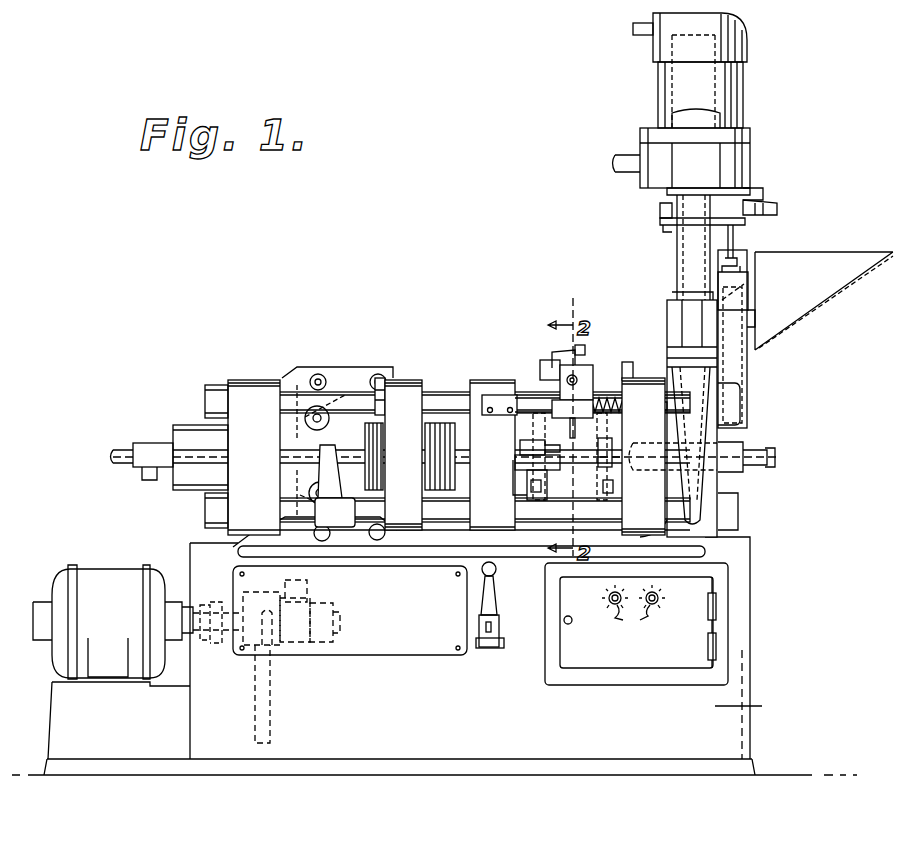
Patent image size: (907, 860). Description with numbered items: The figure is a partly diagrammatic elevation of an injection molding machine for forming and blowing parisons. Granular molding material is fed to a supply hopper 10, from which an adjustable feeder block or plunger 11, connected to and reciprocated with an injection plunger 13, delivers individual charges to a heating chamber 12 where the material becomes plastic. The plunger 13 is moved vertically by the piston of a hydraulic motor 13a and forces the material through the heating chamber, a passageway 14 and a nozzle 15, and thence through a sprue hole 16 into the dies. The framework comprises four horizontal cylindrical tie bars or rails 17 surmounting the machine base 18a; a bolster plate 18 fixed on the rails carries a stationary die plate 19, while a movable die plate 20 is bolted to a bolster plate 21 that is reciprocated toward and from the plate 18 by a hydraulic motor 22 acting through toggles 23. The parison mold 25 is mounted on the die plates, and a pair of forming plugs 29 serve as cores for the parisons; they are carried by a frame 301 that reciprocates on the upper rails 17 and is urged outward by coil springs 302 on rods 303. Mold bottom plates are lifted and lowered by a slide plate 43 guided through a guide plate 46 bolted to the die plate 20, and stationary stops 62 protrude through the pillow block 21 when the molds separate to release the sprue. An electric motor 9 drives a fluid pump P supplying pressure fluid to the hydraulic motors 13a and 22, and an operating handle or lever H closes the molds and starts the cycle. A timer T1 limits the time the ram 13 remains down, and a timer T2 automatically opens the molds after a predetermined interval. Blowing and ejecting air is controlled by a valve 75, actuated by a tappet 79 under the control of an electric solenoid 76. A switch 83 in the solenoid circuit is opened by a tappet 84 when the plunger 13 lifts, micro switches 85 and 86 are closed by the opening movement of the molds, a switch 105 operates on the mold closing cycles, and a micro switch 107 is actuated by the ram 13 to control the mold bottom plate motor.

The electric motor 9 is at (82, 583).
The supply hopper 10 is at (850, 275).
The feeder block or plunger 11 is at (747, 362).
The heating chamber 12 is at (718, 375).
The injection plunger 13 is at (710, 240).
The hydraulic motor 13a is at (733, 82).
The passageway 14 is at (717, 477).
The nozzle 15 is at (720, 493).
The sprue hole or passageway 16 is at (570, 495).
The tie bars or rails 17 is at (437, 393).
The bolster plate 18 is at (663, 528).
The machine base 18a is at (755, 694).
The stationary die plate 19 is at (608, 493).
The movable die plate 20 is at (590, 425).
The bolster plate 21 is at (477, 530).
The hydraulic motor 22 is at (348, 440).
The toggles 23 is at (357, 380).
The parison mold 25 is at (548, 430).
The plungers or forming plugs 29 is at (581, 438).
The slide plate 43 is at (528, 493).
The guide plate 46 is at (542, 500).
The stationary stops 62 is at (290, 461).
The valve 75 is at (582, 360).
The electric solenoid 76 is at (542, 374).
The tappet 79 is at (583, 350).
The switch 83 is at (750, 192).
The tappet 84 is at (763, 203).
The micro switch 85 is at (379, 383).
The micro switch 86 is at (383, 400).
The switch 105 is at (628, 363).
The micro switch 107 is at (660, 206).
The frame 301 is at (590, 385).
The coil springs 302 is at (632, 398).
The rods 303 is at (650, 408).
The fluid pump P is at (305, 600).
The operating handle or lever H is at (496, 605).
The electric timer T1 is at (610, 611).
The timer T2 is at (652, 611).